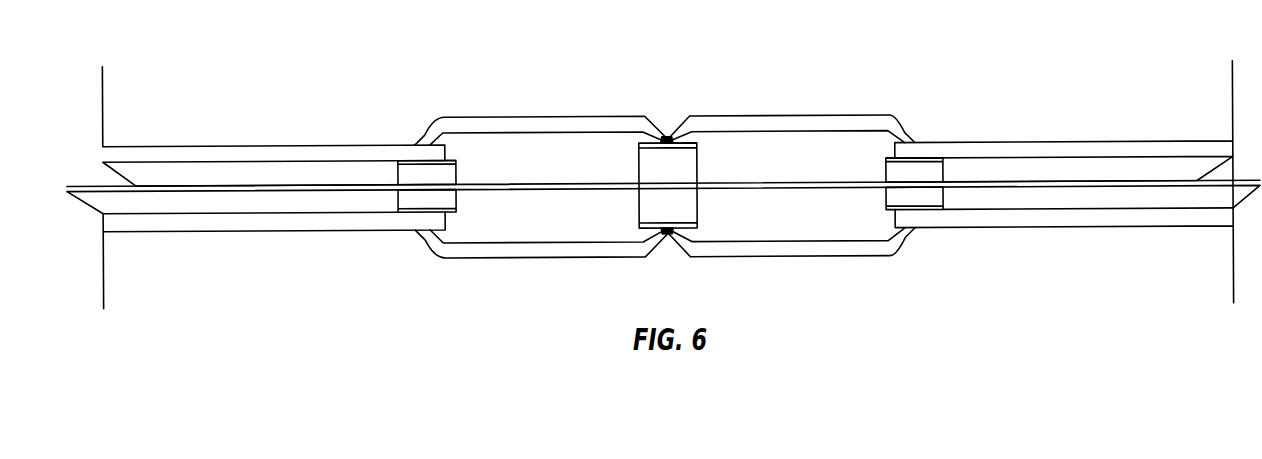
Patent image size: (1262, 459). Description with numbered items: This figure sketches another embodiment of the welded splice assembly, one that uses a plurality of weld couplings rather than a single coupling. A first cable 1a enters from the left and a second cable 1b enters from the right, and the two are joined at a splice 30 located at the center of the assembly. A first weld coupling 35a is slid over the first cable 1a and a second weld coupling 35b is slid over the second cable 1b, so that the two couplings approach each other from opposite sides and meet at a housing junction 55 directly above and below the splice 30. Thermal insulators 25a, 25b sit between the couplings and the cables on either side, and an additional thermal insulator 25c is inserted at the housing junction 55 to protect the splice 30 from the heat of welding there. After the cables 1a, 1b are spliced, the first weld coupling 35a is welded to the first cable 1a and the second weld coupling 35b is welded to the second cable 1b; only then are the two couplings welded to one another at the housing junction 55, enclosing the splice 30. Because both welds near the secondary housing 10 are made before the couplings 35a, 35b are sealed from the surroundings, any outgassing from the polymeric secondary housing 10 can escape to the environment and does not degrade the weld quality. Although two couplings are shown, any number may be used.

The first cable 1a is at (248, 143).
The second cable 1b is at (1020, 144).
The secondary housing 10 is at (217, 176).
The thermal insulator 25a is at (425, 212).
The thermal insulator 25b is at (913, 212).
The additional thermal insulator 25c is at (670, 232).
The splice 30 is at (670, 182).
The first weld coupling 35a is at (607, 128).
The second weld coupling 35b is at (783, 126).
The housing junction 55 is at (668, 135).